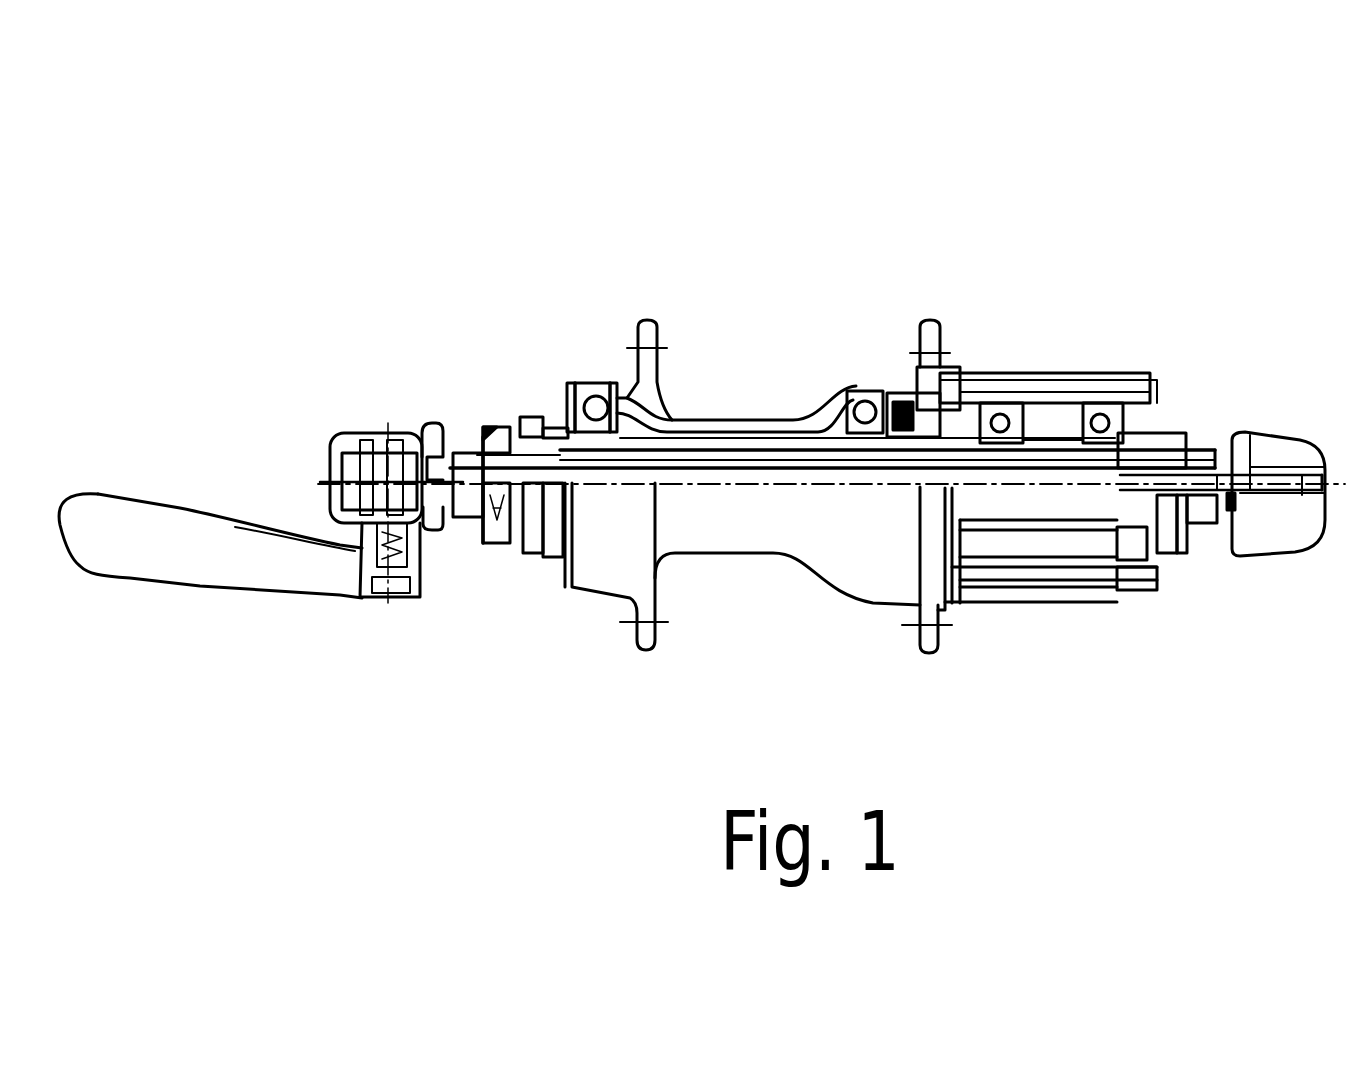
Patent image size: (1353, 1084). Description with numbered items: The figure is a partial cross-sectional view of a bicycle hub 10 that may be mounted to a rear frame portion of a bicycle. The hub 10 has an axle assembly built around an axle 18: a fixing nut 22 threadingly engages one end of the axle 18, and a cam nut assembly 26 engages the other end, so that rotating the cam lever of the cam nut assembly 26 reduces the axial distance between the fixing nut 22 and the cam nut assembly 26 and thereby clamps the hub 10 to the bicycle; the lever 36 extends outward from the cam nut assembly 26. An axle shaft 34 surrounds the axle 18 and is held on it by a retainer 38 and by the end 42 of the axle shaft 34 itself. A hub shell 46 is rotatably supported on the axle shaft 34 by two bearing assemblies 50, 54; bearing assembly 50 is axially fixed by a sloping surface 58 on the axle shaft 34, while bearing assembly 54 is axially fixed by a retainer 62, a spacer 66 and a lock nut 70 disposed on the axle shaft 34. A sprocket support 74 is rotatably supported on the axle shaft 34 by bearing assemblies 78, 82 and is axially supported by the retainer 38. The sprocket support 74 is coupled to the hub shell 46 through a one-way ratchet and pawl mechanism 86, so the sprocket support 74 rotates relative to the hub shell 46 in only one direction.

The bicycle hub 10 is at (322, 253).
The axle 18 is at (600, 475).
The fixing nut 22 is at (1284, 430).
The cam nut assembly 26 is at (296, 424).
The axle shaft 34 is at (740, 446).
The quick release lever 36 is at (97, 513).
The retainer 38 is at (1175, 553).
The end of axle shaft 42 is at (468, 520).
The hub shell 46 is at (750, 420).
The bearing assembly 50 is at (595, 418).
The bearing assembly 54 is at (863, 406).
The sloping surface 58 is at (872, 432).
The retainer 62 is at (563, 420).
The spacer 66 is at (530, 418).
The lock nut 70 is at (500, 420).
The sprocket support 74 is at (1055, 603).
The bearing assembly 78 is at (1003, 410).
The bearing assembly 82 is at (1100, 410).
The one-way ratchet and pawl mechanism 86 is at (908, 378).